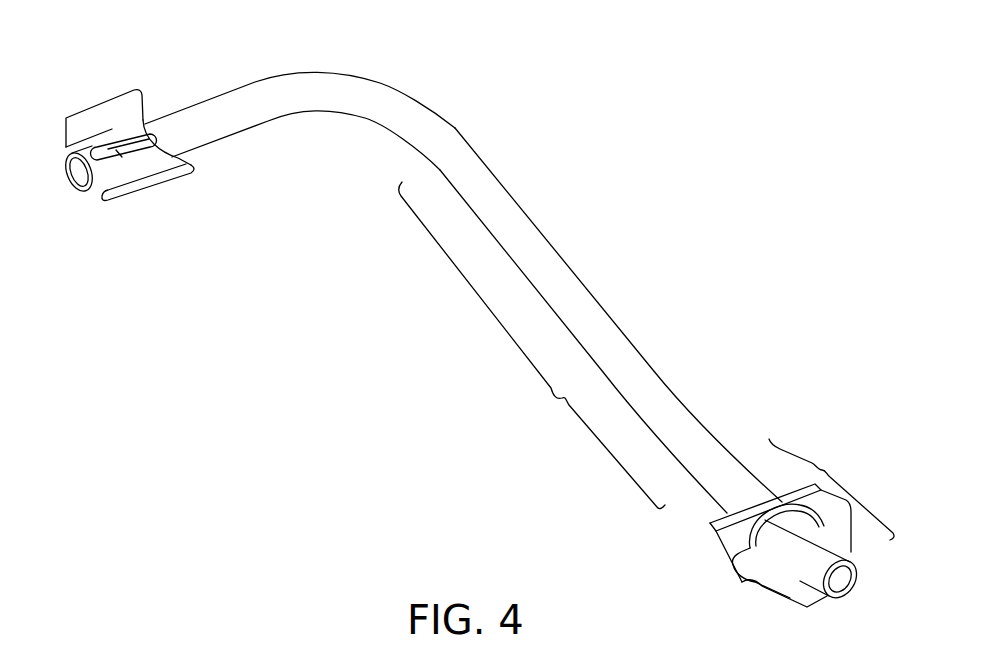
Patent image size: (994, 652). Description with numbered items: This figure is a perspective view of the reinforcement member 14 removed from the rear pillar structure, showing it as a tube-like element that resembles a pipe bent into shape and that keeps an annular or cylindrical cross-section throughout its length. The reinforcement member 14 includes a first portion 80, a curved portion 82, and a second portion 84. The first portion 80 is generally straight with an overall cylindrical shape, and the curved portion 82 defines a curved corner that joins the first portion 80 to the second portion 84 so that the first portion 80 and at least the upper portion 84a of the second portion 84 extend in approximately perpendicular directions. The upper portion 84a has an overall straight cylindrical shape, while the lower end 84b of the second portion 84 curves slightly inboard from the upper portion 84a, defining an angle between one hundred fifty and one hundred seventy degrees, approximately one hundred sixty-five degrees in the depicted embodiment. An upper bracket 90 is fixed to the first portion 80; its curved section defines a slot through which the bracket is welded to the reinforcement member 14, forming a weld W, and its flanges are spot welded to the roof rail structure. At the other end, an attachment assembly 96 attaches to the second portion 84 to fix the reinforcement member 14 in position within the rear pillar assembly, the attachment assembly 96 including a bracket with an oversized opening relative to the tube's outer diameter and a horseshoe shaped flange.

The reinforcement member 14 is at (477, 315).
The first portion 80 is at (112, 150).
The curved portion 82 is at (332, 90).
The second portion 84 is at (612, 338).
The upper portion 84a is at (532, 345).
The lower end 84b is at (831, 488).
The upper bracket 90 is at (163, 187).
The attachment assembly 96 is at (716, 561).
The weld W is at (119, 153).